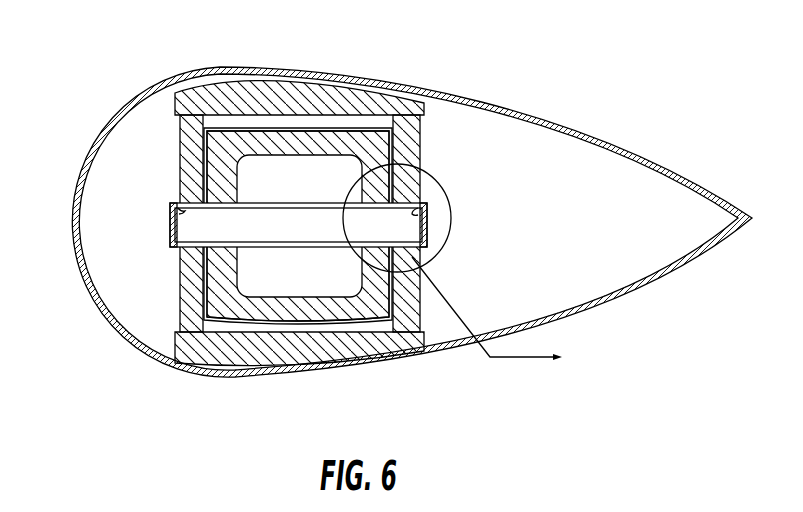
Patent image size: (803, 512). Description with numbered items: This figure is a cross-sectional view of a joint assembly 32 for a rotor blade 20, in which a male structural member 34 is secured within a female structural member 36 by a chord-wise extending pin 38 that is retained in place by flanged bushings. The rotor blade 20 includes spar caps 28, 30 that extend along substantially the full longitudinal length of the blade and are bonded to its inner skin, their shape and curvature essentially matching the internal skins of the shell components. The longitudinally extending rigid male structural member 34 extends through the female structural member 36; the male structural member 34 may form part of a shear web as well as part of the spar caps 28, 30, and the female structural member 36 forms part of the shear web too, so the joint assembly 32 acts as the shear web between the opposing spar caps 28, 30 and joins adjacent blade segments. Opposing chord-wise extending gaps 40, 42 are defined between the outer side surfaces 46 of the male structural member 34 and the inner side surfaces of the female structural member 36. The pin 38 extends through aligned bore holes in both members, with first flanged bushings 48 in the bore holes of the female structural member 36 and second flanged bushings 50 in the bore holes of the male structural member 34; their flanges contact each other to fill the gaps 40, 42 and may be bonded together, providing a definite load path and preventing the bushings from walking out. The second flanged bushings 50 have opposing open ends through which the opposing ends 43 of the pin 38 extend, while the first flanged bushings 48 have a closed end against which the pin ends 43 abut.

The rotor blade 20 is at (404, 227).
The spar cap 28 is at (304, 86).
The spar cap 30 is at (312, 352).
The joint assembly 32 is at (545, 203).
The male structural member 34 is at (218, 175).
The female structural member 36 is at (408, 153).
The chord-wise extending pin 38 is at (190, 233).
The chord-wise extending gap 40 is at (216, 302).
The chord-wise extending gap 42 is at (413, 268).
The opposing ends of the pin 43 is at (180, 202).
The outer side surface 46 is at (217, 330).
The first flanged bushing 48 is at (434, 230).
The second flanged bushing 50 is at (378, 188).